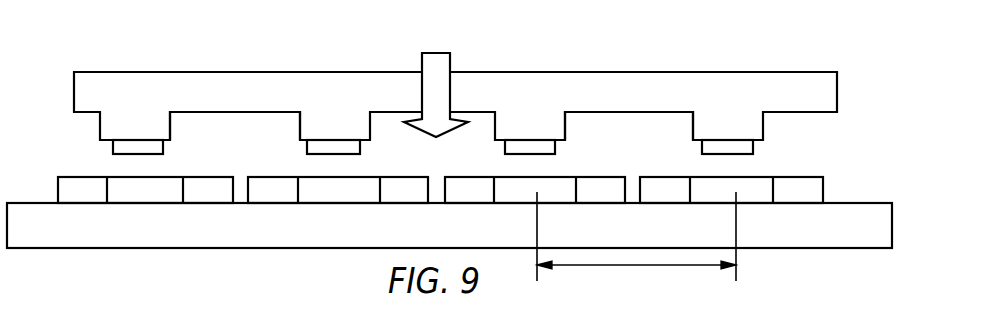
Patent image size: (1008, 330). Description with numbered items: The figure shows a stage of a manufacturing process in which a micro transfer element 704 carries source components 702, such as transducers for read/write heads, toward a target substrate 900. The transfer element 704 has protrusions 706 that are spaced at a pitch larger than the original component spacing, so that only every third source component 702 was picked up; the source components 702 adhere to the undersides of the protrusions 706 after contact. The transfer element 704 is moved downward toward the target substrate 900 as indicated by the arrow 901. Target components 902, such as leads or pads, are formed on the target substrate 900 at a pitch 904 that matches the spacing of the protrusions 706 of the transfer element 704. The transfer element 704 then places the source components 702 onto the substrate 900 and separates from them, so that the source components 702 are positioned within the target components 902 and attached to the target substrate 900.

The micro transfer element 704 is at (345, 72).
The protrusions 706 is at (300, 125).
The source components 702 is at (122, 154).
The arrow 901 is at (451, 58).
The target substrate 900 is at (187, 248).
The components 902 is at (80, 186).
The pitch 904 is at (641, 265).